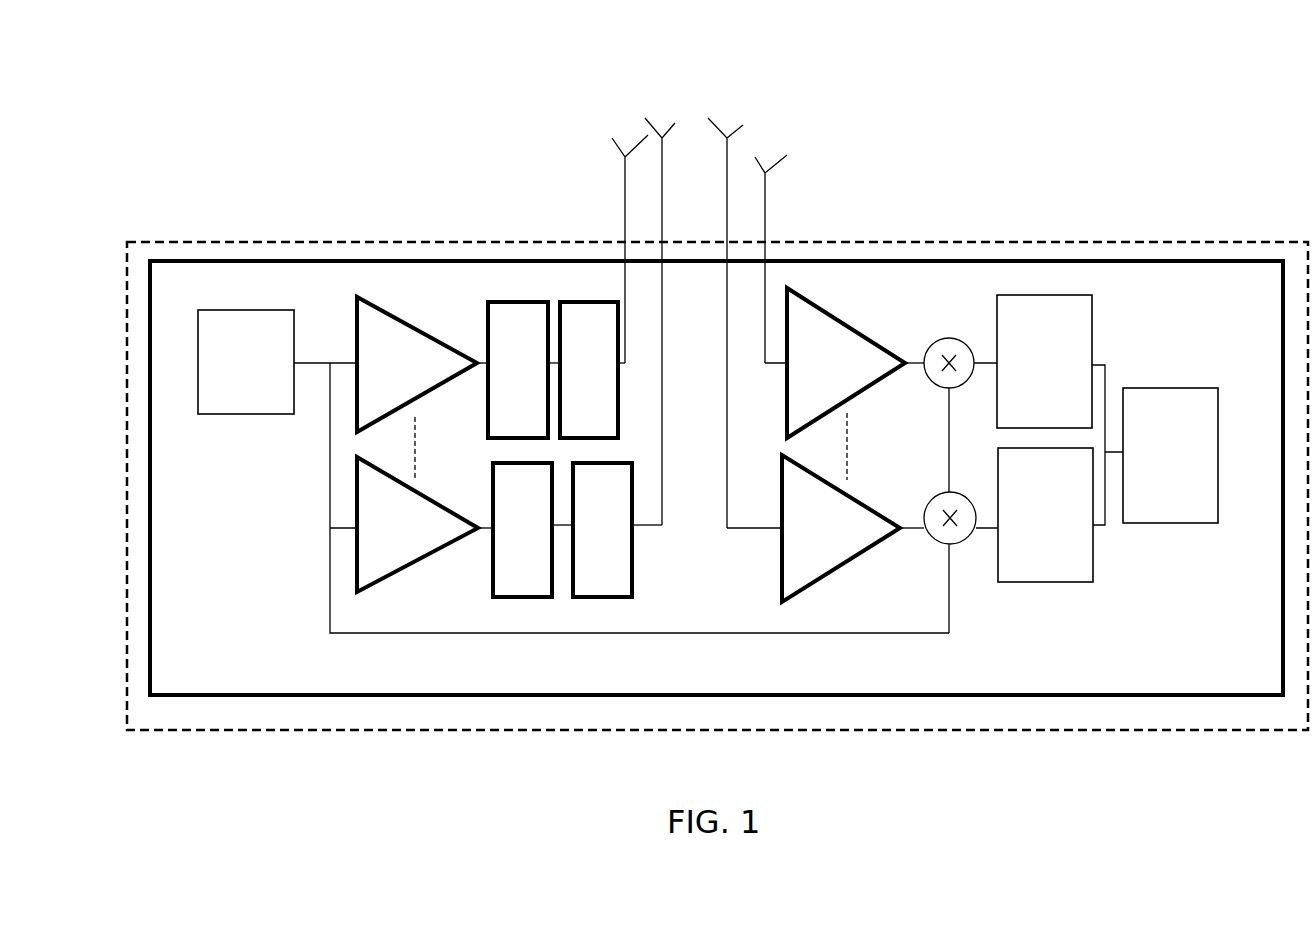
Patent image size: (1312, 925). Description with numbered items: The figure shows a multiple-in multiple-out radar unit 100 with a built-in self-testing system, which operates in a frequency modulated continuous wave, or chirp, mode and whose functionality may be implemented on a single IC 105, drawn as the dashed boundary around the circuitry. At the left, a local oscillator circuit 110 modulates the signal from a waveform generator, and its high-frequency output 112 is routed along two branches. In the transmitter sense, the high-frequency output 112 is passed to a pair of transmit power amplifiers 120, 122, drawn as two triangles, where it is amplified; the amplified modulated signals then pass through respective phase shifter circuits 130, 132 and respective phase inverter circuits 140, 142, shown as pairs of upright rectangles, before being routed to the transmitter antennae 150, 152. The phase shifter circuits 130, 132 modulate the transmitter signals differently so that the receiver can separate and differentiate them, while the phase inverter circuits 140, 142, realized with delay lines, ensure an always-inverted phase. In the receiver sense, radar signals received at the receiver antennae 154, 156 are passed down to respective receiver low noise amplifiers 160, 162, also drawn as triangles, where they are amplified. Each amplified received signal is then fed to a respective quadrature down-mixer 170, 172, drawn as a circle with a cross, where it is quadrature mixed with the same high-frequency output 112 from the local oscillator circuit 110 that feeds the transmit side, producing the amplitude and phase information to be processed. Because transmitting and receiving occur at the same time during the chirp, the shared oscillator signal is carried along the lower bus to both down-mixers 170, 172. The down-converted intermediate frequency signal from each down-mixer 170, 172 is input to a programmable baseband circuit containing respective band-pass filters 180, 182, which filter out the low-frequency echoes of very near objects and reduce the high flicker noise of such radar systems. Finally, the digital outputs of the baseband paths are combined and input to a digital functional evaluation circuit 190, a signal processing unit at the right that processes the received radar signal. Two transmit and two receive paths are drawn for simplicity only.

The MIMO radar unit 100 is at (955, 140).
The single IC 105 is at (1195, 242).
The local oscillator circuit 110 is at (290, 308).
The high-frequency output 112 is at (330, 597).
The transmit power amplifier 120 is at (363, 300).
The transmit power amplifier 122 is at (422, 490).
The phase shifter circuit 130 is at (522, 298).
The phase shifter circuit 132 is at (513, 598).
The phase inverter circuit 140 is at (598, 298).
The phase inverter circuit 142 is at (590, 598).
The transmitter antenna 150 is at (623, 133).
The transmitter antenna 152 is at (665, 117).
The receiver antenna 154 is at (735, 112).
The receiver antenna 156 is at (785, 163).
The receiver low noise amplifier 160 is at (820, 302).
The receiver low noise amplifier 162 is at (843, 495).
The quadrature down-mixer 170 is at (948, 328).
The quadrature down-mixer 172 is at (960, 548).
The band-pass filter 180 is at (1062, 292).
The band-pass filter 182 is at (1060, 582).
The digital functional evaluation circuit 190 is at (1160, 385).